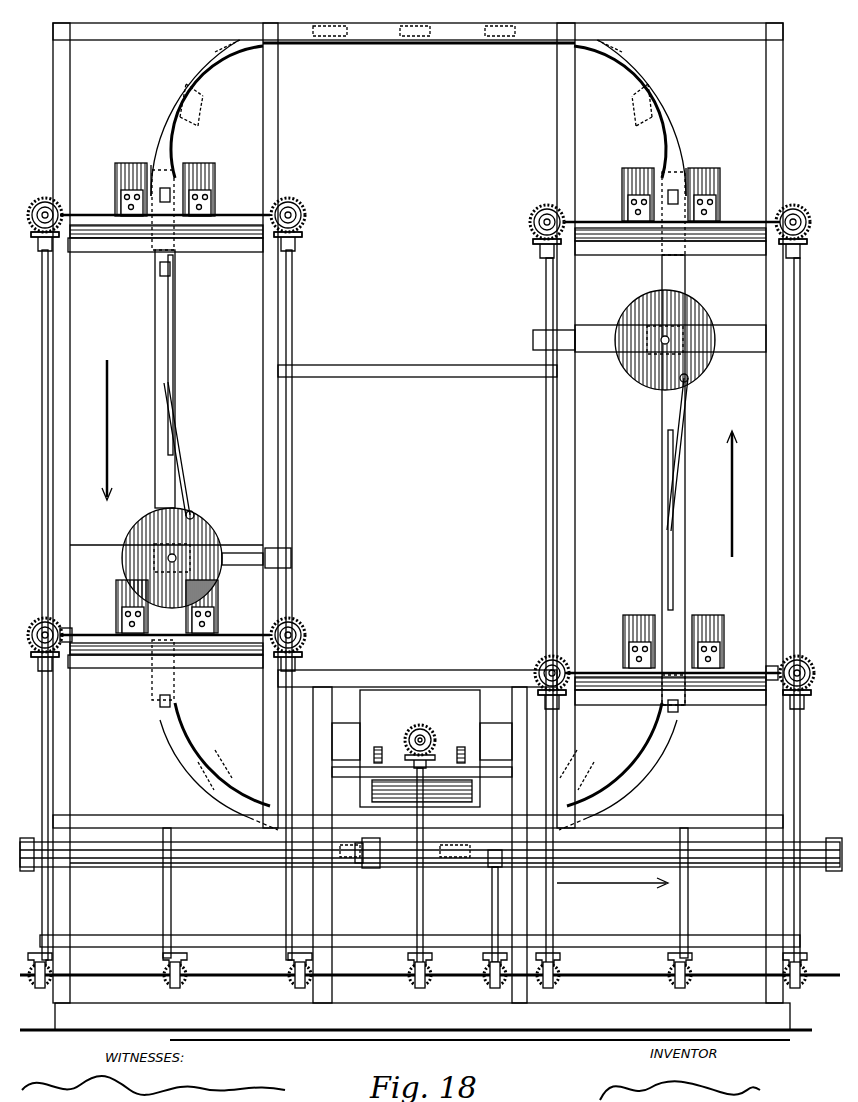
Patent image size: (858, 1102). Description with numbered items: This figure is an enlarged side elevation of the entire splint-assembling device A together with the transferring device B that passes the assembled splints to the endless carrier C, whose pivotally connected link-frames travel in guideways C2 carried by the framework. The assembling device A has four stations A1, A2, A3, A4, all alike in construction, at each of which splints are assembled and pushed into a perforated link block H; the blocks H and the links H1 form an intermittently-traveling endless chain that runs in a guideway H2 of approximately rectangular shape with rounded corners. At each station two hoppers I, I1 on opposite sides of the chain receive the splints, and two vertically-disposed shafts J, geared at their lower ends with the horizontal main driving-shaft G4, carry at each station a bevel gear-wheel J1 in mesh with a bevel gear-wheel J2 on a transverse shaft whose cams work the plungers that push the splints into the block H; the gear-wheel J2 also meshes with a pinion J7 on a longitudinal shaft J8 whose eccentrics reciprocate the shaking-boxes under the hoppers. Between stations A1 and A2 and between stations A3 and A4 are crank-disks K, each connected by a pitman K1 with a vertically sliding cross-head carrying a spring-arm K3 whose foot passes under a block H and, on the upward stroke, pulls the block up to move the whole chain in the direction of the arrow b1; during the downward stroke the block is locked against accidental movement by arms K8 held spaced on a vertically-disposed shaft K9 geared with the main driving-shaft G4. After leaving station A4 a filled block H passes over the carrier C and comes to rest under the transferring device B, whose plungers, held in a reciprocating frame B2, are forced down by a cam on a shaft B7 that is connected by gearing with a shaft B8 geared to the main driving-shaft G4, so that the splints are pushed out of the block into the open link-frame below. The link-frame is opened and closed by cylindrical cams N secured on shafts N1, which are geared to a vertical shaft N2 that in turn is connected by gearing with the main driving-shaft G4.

The assembling device A is at (418, 513).
The station A1 is at (707, 667).
The station A2 is at (698, 198).
The station A3 is at (138, 194).
The station A4 is at (132, 648).
The transferring device B is at (417, 836).
The reciprocating frame B2 is at (372, 788).
The shaft B7 is at (425, 738).
The shaft B8 is at (423, 882).
The carrier C is at (431, 867).
The guideways C2 is at (247, 866).
The main driving-shaft G4 is at (263, 990).
The link block H is at (240, 85).
The links H1 is at (185, 96).
The guideway H2 is at (166, 130).
The hopper I is at (122, 180).
The hopper I1 is at (214, 180).
The vertically-disposed shaft J is at (42, 497).
The bevel gear-wheel J1 is at (38, 246).
The bevel gear-wheel J2 is at (306, 210).
The pinion J7 is at (72, 634).
The shaft J8 is at (96, 226).
The crank-disk K is at (210, 536).
The pitman K1 is at (190, 452).
The spring-arm K3 is at (180, 325).
The arms K8 is at (168, 190).
The vertically-disposed shaft K9 is at (171, 890).
The cylindrical cam N is at (380, 868).
The shaft N1 is at (358, 864).
The vertical shaft N2 is at (496, 900).
The arrow b1 is at (429, 624).